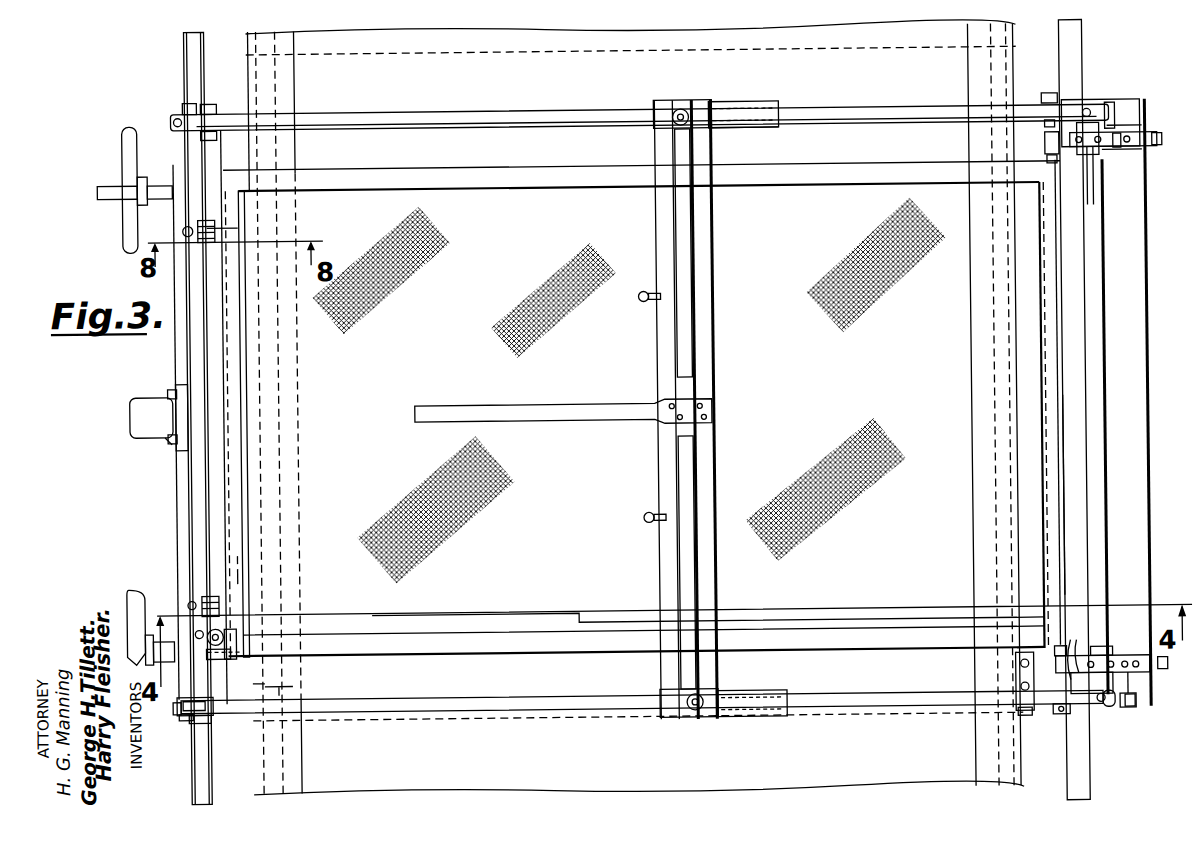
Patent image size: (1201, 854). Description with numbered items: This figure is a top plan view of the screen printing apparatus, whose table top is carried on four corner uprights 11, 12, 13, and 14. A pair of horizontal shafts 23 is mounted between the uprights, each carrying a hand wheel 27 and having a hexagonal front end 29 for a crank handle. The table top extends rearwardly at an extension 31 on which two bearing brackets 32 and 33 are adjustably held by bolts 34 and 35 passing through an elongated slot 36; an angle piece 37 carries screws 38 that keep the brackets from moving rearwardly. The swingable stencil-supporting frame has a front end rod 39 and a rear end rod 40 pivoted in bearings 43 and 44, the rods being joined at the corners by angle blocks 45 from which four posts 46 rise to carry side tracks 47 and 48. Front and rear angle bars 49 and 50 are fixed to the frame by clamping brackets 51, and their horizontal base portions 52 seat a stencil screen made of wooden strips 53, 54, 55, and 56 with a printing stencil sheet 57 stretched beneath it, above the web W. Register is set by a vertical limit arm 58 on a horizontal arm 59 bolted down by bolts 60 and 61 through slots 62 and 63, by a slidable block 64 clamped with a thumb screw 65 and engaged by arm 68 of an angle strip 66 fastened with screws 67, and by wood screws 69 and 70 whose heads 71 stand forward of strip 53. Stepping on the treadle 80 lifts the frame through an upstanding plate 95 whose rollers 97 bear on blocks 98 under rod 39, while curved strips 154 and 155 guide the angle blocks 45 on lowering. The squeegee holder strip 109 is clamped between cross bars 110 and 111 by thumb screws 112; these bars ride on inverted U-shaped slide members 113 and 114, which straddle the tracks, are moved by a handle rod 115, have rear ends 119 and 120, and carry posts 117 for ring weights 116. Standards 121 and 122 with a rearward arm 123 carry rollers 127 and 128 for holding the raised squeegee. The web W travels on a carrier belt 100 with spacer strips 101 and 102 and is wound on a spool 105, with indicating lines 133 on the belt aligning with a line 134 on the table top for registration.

The corner upright 11 is at (186, 162).
The corner upright 12 is at (170, 700).
The corner upright 13 is at (1088, 603).
The corner upright 14 is at (1085, 196).
The horizontal shaft 23 is at (152, 620).
The hand wheel 27 is at (132, 590).
The front end of shaft 29 is at (118, 192).
The table top extension 31 is at (1148, 306).
The bearing bracket 32 is at (1108, 661).
The bearing bracket 33 is at (1112, 164).
The bolt 34 is at (1128, 160).
The bolt 35 is at (1140, 150).
The elongated slot 36 is at (1138, 134).
The angle piece 37 is at (1133, 703).
The screw 38 is at (1165, 672).
The front end rod 39 is at (176, 362).
The rear end rod 40 is at (1105, 392).
The bearing 43 is at (1108, 652).
The bearing 44 is at (1096, 172).
The angle block 45 is at (186, 732).
The vertical post 46 is at (172, 118).
The side rod 47 is at (590, 706).
The side rod 48 is at (503, 112).
The angle bar 49 is at (222, 522).
The angle bar 50 is at (1068, 492).
The clamping bracket 51 is at (1052, 98).
The horizontal base portion 52 is at (1040, 148).
The front strip 53 is at (247, 384).
The strip 54 is at (500, 640).
The rear strip 55 is at (1045, 392).
The strip 56 is at (822, 192).
The printing stencil sheet 57 is at (832, 520).
The vertical limit arm 58 is at (1012, 661).
The horizontal arm 59 is at (1015, 714).
The bolt 60 is at (1015, 673).
The bolt 61 is at (1015, 690).
The elongated slot 62 is at (1052, 652).
The elongated slot 63 is at (1052, 716).
The slidable block 64 is at (222, 632).
The thumb screw 65 is at (190, 622).
The angle strip 66 is at (226, 634).
The screw 67 is at (232, 648).
The arm of angle strip 68 is at (222, 655).
The wood screw 69 is at (240, 570).
The wood screw 70 is at (218, 226).
The screw head 71 is at (240, 552).
The treadle 80 is at (140, 430).
The upstanding plate 95 is at (168, 410).
The roller 97 is at (172, 458).
The block 98 is at (170, 440).
The carrier belt 100 is at (292, 769).
The spacer strip 101 is at (290, 786).
The spacer strip 102 is at (1000, 770).
The spool 105 is at (262, 758).
The strip 109 is at (696, 348).
The transverse angle bar 110 is at (660, 340).
The transverse angle bar 111 is at (714, 303).
The thumb screw 112 is at (645, 516).
The slide member 113 is at (745, 718).
The slide member 114 is at (772, 103).
The handle rod 115 is at (500, 412).
The ring shaped weight 116 is at (693, 112).
The vertical post 117 is at (684, 110).
The rear end of guide member 119 is at (790, 692).
The rear end of guide member 120 is at (788, 128).
The standard 121 is at (1065, 655).
The standard 122 is at (1050, 152).
The rearwardly extending arm 123 is at (1074, 645).
The roller 127 is at (1128, 712).
The roller 128 is at (1052, 170).
The indicating line 133 is at (290, 690).
The indicating line 134 is at (252, 684).
The curved strip 154 is at (195, 756).
The curved strip 155 is at (192, 100).
The web W is at (634, 407).